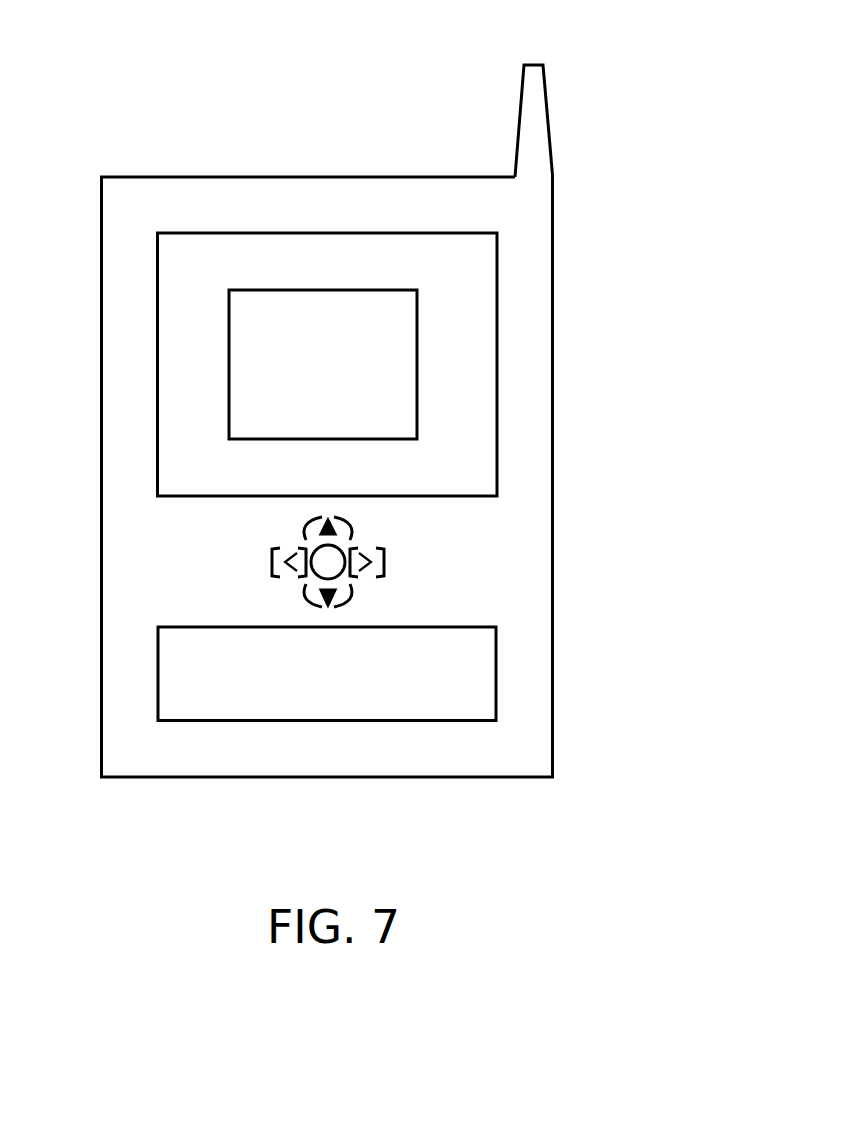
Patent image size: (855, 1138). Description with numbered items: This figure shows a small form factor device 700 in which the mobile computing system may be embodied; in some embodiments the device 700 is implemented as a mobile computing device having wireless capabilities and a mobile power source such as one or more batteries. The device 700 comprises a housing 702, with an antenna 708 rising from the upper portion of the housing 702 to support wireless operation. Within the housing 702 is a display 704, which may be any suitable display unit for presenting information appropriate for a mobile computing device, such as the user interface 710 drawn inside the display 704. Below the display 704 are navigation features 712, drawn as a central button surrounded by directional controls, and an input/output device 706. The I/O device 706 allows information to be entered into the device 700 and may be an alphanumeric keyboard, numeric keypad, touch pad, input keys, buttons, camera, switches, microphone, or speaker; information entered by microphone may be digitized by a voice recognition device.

The small form factor device 700 is at (113, 72).
The housing 702 is at (553, 477).
The display 704 is at (497, 252).
The input/output (I/O) device 706 is at (496, 665).
The antenna 708 is at (518, 112).
The user interface 710 is at (417, 388).
The navigation features 712 is at (405, 548).